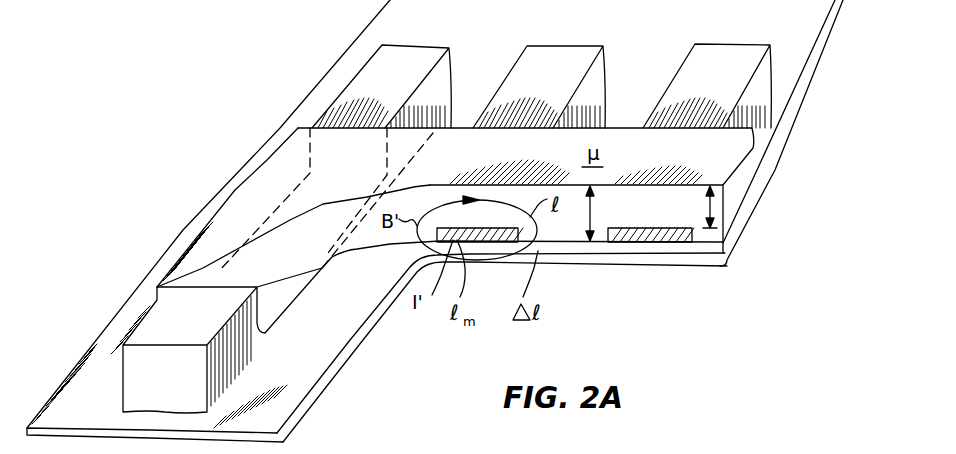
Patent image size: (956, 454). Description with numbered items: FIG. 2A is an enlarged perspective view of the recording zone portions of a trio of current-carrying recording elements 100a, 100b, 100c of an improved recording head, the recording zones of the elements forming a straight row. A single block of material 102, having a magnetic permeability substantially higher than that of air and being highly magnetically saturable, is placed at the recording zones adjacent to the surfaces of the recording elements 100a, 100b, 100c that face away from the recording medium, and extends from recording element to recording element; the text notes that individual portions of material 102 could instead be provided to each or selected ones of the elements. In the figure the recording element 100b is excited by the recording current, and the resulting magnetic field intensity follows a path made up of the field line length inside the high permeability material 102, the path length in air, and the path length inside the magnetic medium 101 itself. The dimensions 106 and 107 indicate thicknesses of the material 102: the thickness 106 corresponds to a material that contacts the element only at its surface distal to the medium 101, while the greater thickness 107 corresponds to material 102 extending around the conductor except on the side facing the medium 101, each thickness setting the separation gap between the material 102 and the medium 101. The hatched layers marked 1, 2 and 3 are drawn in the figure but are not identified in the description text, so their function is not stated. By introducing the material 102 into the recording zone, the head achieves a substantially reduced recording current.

The magnetoresistive element 1 is at (677, 237).
The insulating layer 2 is at (722, 250).
The substrate layer 3 is at (697, 258).
The recording element 100a is at (417, 52).
The recording element 100b is at (563, 53).
The recording element 100c is at (730, 57).
The magnetic medium 101 is at (815, 41).
The material 102 is at (292, 160).
The thickness 106 is at (714, 206).
The thickness 107 is at (596, 211).